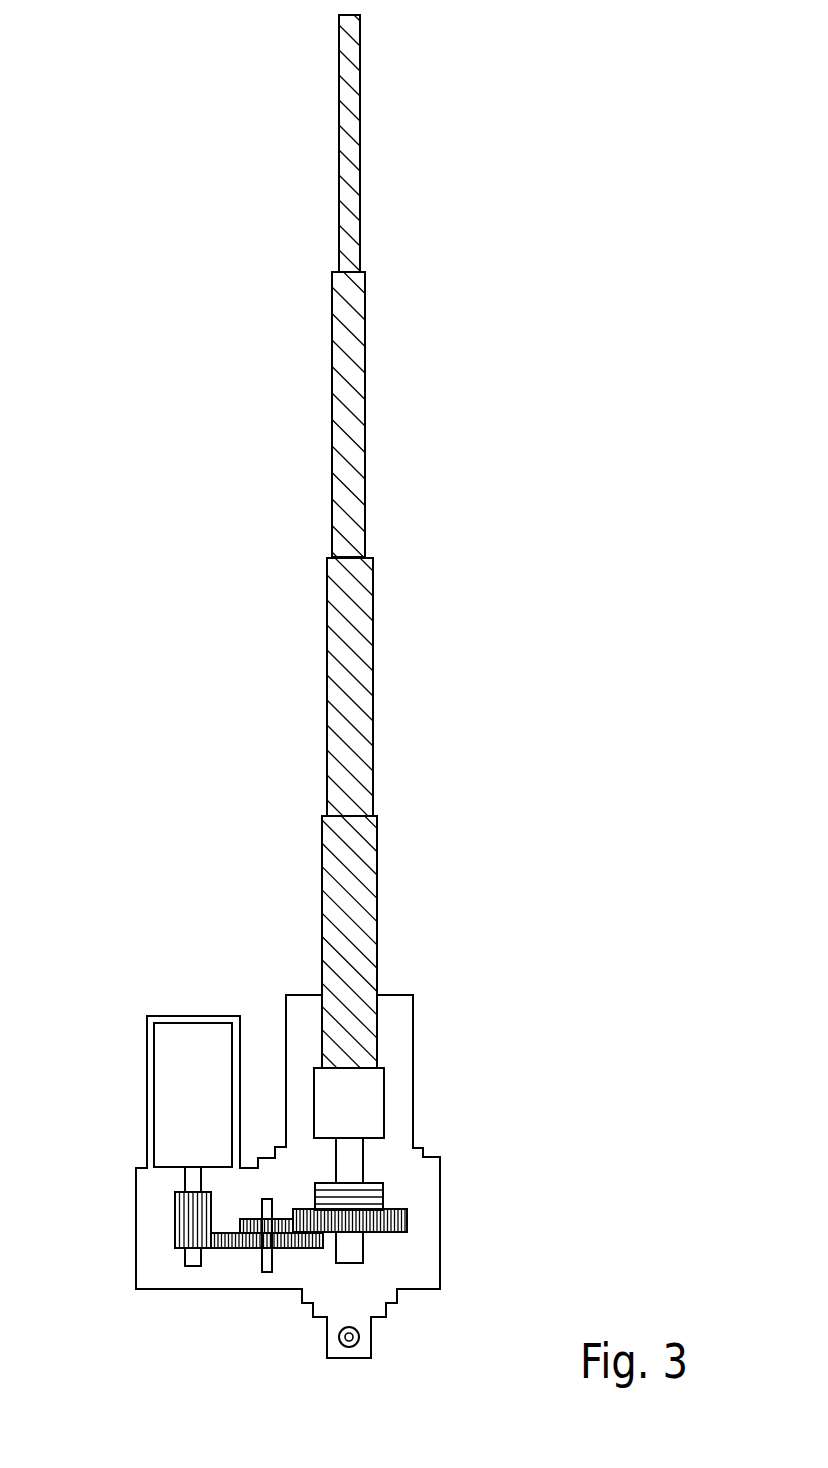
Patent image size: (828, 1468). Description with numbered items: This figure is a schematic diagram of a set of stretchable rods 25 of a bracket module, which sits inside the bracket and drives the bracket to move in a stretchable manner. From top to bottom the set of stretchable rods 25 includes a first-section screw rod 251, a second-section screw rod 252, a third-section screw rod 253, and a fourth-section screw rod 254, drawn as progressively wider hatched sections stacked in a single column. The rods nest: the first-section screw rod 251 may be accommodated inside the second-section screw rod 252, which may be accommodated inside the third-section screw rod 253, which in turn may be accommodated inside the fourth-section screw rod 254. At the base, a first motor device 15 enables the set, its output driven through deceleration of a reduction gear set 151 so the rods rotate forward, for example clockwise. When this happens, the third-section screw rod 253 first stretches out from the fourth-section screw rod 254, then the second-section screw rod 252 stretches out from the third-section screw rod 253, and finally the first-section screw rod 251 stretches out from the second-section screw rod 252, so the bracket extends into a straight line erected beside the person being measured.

The first motor device 15 is at (165, 1108).
The reduction gear set 151 is at (156, 1219).
The set of stretchable rods 25 is at (419, 554).
The first-section screw rod 251 is at (355, 153).
The second-section screw rod 252 is at (363, 397).
The third-section screw rod 253 is at (368, 675).
The fourth-section screw rod 254 is at (383, 940).